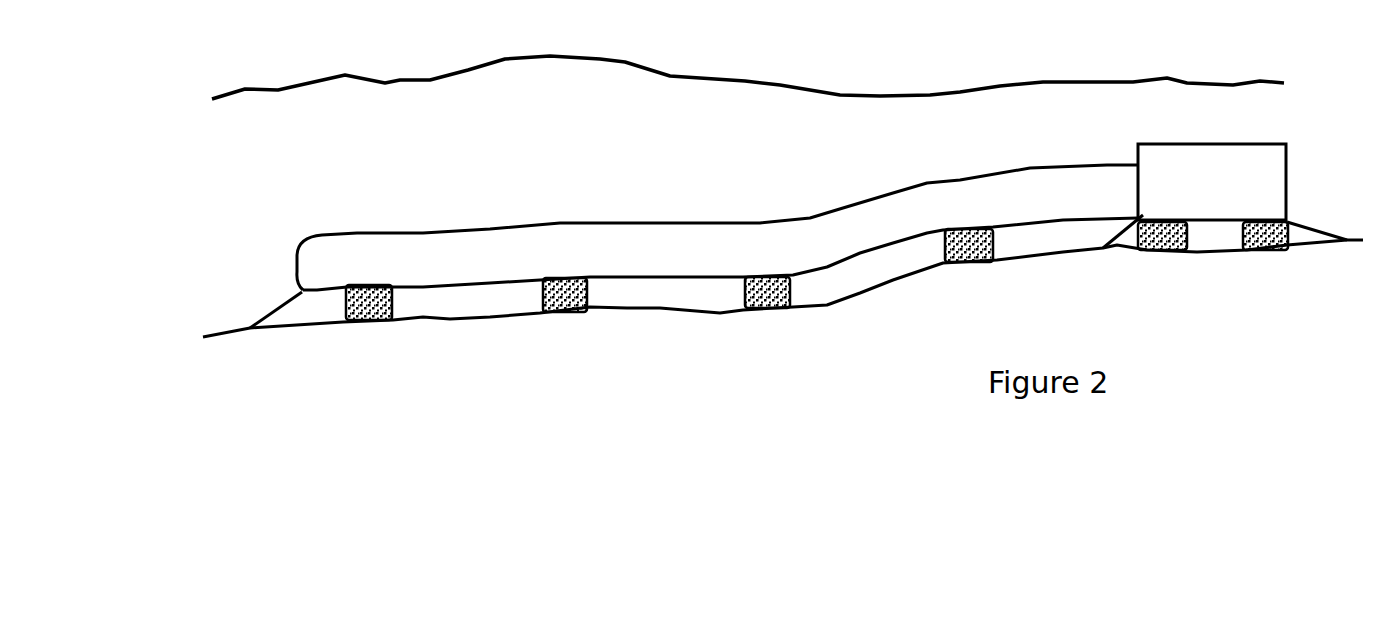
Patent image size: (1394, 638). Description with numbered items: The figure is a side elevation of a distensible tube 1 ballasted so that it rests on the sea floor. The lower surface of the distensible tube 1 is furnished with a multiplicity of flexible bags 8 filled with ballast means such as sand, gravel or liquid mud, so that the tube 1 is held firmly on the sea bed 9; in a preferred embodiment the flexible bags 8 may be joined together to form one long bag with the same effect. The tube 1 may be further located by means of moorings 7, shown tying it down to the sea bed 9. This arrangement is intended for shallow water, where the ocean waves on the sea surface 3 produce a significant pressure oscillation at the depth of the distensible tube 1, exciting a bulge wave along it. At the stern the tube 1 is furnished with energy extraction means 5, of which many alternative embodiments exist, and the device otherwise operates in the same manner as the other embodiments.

The distensible tube 1 is at (660, 280).
The sea surface 3 is at (1044, 78).
The energy extraction means 5 is at (1290, 158).
The moorings 7 is at (278, 312).
The flexible bags 8 is at (813, 308).
The sea bed 9 is at (1065, 257).